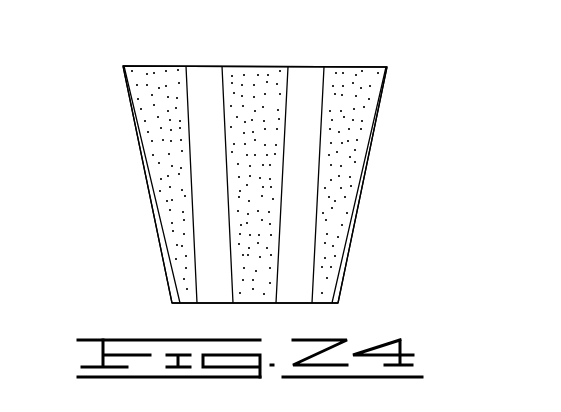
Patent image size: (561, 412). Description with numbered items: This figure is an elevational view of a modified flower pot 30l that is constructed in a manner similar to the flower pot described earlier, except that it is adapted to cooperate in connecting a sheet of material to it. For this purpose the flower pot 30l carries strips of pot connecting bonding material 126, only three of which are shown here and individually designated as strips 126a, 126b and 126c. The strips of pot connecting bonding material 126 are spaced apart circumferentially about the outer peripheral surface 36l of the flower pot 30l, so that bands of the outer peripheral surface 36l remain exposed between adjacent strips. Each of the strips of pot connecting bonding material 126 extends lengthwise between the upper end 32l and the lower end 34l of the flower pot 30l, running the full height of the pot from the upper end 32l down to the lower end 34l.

The pot connecting bonding material strips 126 is at (141, 145).
The first strip of pot connecting bonding material 126a is at (148, 78).
The second strip of pot connecting bonding material 126b is at (262, 90).
The third strip of pot connecting bonding material 126c is at (344, 80).
The upper end 32l is at (367, 67).
The outer peripheral surface 36l is at (153, 216).
The flower pot 30l is at (358, 205).
The lower end 34l is at (339, 304).